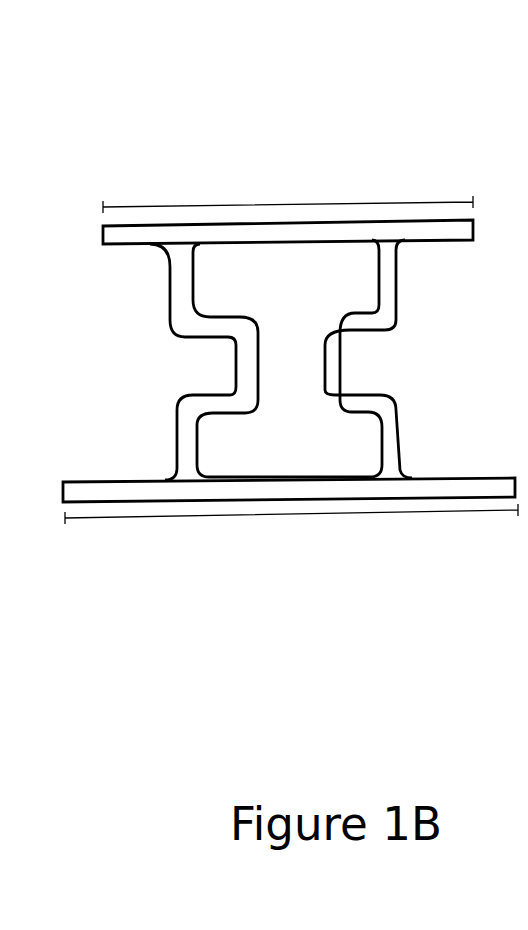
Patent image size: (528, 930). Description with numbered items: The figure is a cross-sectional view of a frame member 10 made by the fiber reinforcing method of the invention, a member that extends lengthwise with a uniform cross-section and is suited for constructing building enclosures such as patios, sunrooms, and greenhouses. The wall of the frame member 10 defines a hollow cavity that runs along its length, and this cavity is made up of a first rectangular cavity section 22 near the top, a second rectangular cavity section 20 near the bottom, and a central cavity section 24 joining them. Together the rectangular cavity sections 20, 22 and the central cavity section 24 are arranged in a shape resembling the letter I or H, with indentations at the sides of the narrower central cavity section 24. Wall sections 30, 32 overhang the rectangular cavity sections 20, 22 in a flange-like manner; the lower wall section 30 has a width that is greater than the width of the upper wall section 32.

The frame member 10 is at (281, 120).
The rectangular cavity section 20 is at (310, 448).
The rectangular cavity section 22 is at (307, 278).
The central cavity section 24 is at (287, 372).
The wall section 30 is at (103, 493).
The wall section 32 is at (125, 232).